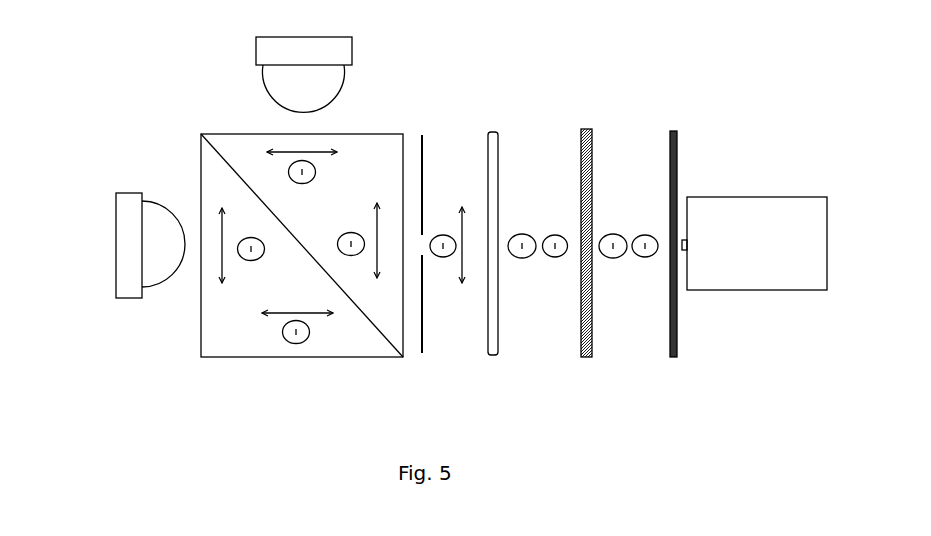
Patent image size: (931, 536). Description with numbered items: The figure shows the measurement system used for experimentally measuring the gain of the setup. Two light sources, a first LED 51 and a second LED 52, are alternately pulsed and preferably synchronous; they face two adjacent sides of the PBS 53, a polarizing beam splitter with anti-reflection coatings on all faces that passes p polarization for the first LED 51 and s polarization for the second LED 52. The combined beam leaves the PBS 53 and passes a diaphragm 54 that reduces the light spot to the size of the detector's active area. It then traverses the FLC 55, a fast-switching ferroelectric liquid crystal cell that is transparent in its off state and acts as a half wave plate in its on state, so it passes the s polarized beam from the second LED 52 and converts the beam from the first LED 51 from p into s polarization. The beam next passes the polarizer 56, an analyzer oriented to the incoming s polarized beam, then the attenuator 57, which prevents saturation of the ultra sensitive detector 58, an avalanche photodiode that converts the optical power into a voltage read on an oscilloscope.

The LED 1 51 is at (116, 193).
The LED 2 52 is at (256, 52).
The PBS 53 is at (197, 318).
The diaphragm 54 is at (422, 355).
The FLC 55 is at (497, 137).
The polarizer 56 is at (585, 358).
The attenuator 57 is at (673, 130).
The detector 58 is at (828, 212).